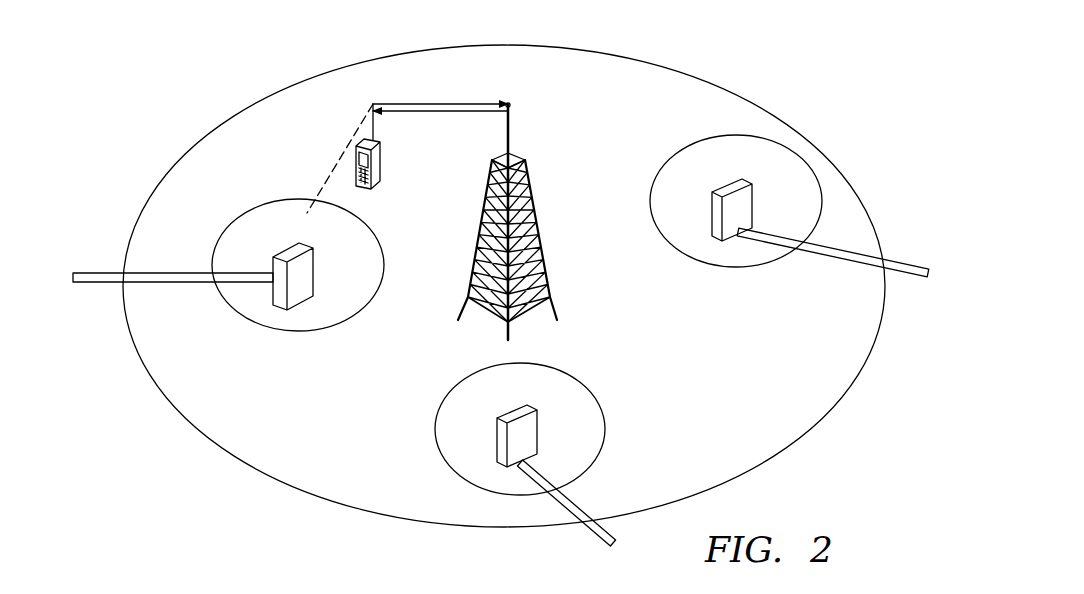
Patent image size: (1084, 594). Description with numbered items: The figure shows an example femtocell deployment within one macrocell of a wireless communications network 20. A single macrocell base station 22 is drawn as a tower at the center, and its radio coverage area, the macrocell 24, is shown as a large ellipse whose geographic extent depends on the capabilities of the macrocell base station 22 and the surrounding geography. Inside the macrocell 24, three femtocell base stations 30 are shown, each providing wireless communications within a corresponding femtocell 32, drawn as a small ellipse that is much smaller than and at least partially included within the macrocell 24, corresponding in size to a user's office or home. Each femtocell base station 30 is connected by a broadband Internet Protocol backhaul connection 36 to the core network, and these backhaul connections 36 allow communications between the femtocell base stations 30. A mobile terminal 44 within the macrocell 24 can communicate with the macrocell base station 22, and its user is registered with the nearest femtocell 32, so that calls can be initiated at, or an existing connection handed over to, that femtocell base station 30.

The wireless communication system 20 is at (240, 83).
The macrocell base station 22 is at (547, 262).
The macrocell 24 is at (698, 80).
The femtocell base station 30 is at (303, 273).
The femtocell 32 is at (277, 203).
The backhaul connection 36 is at (92, 284).
The mobile terminal 44 is at (383, 175).